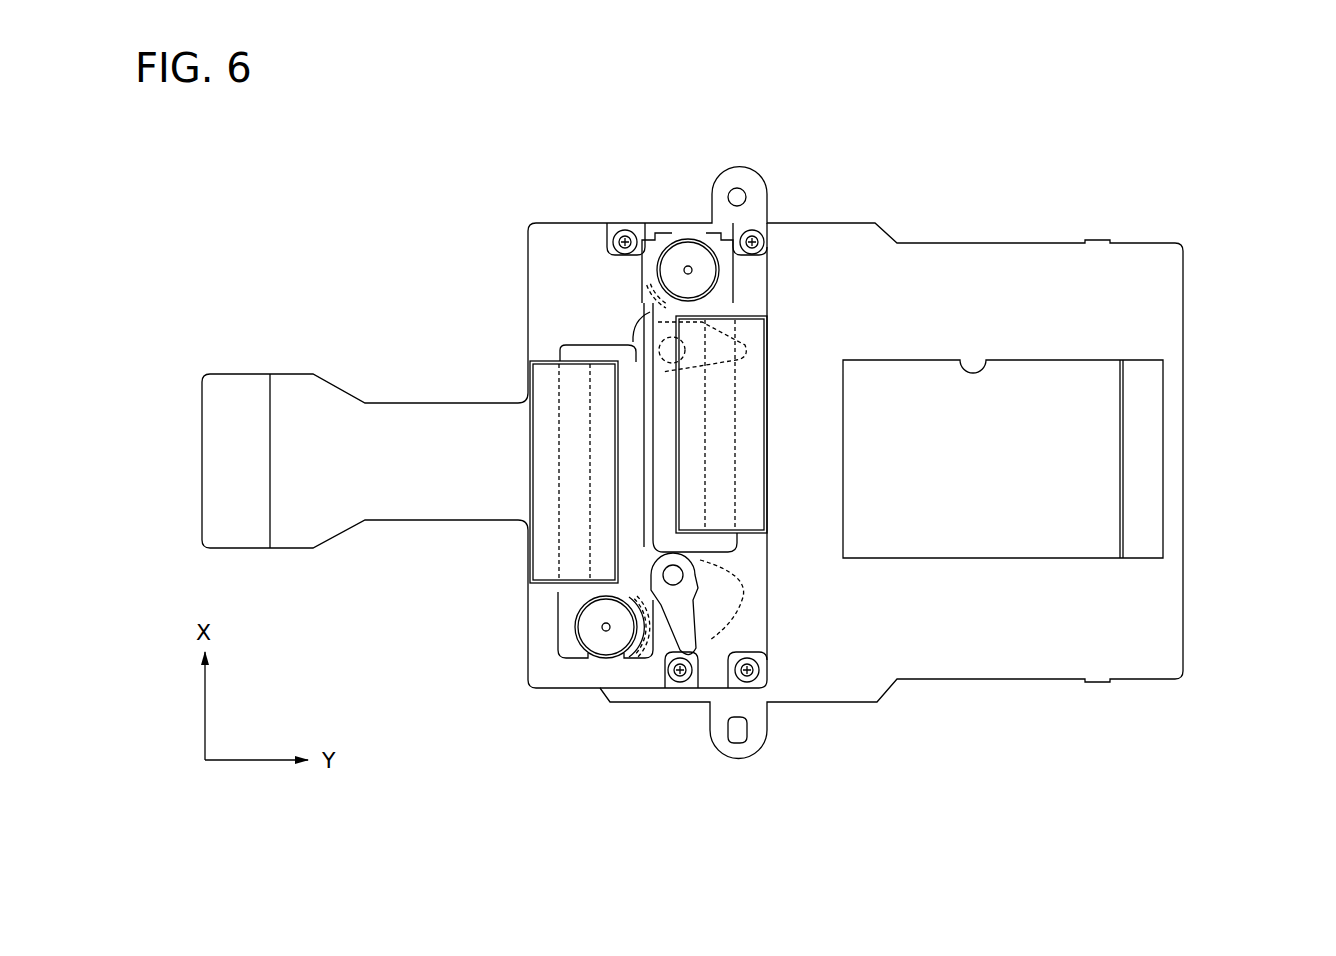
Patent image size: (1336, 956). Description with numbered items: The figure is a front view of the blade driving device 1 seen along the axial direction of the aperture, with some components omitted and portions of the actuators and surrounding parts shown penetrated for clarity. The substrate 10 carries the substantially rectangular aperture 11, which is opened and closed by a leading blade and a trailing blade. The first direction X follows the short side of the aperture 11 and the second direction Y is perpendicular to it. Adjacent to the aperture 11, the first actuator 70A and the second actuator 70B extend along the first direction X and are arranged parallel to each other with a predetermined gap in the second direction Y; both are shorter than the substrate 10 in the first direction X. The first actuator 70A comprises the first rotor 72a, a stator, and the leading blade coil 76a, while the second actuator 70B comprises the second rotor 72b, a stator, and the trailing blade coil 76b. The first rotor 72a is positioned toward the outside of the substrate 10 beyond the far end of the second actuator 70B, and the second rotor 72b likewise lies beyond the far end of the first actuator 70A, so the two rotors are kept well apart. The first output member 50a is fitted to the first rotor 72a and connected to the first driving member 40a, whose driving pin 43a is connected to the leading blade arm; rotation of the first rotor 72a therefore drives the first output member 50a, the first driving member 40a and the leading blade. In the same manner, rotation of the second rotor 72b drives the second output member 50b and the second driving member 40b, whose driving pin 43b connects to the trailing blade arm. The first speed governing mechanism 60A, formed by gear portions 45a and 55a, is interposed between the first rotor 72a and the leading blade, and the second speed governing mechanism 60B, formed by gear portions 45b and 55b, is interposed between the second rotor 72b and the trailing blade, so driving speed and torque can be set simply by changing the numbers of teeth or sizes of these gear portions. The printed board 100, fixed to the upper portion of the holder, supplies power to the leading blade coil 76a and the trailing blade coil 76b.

The blade driving device 1 is at (1162, 192).
The substrate 10 is at (1193, 627).
The aperture 11 is at (987, 373).
The printed board 100 is at (333, 523).
The first driving member 40a is at (718, 600).
The second driving member 40b is at (627, 331).
The driving pin 43a is at (681, 672).
The driving pin 43b is at (700, 272).
The gear portion 45a is at (576, 582).
The gear portion 45b is at (648, 312).
The first output member 50a is at (662, 630).
The second output member 50b is at (635, 282).
The gear portion 55a is at (655, 642).
The gear portion 55b is at (652, 300).
The first speed governing mechanism 60A is at (618, 563).
The second speed governing mechanism 60B is at (617, 313).
The first actuator 70A is at (518, 577).
The second actuator 70B is at (775, 332).
The first rotor 72a is at (590, 655).
The second rotor 72b is at (687, 250).
The leading blade coil 76a is at (543, 468).
The trailing blade coil 76b is at (752, 428).